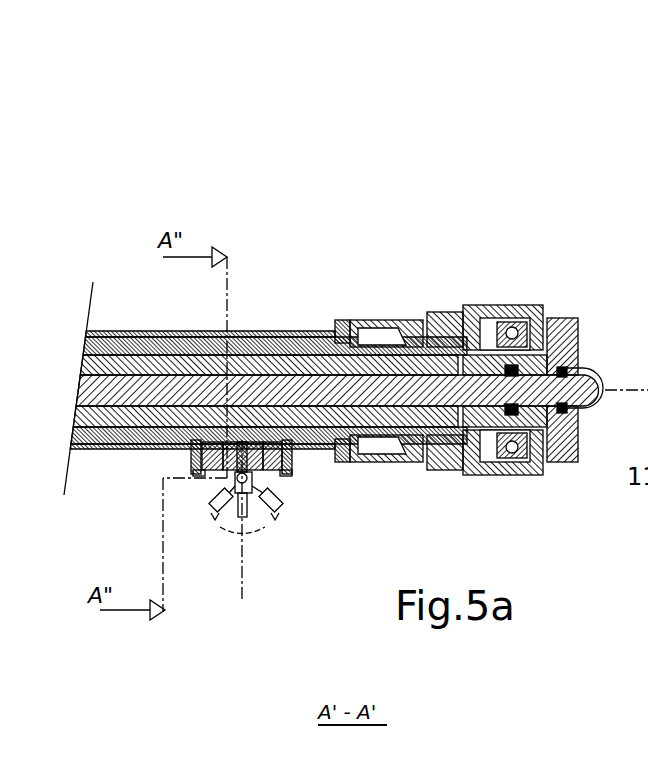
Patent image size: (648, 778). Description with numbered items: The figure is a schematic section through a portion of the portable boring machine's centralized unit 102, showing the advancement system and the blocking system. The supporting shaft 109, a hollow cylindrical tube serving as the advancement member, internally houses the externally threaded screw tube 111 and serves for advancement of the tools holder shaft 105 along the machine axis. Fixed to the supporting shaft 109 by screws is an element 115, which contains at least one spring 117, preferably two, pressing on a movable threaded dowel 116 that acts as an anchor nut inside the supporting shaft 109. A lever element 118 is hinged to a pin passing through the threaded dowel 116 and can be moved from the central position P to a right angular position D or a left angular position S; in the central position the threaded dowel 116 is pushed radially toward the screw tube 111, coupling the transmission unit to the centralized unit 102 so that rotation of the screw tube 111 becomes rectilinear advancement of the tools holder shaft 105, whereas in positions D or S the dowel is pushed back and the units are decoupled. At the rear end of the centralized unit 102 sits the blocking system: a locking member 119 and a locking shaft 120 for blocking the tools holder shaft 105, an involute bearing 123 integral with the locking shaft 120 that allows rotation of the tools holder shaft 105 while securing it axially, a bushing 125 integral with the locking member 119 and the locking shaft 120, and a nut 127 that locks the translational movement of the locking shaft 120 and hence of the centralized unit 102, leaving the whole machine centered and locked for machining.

The centralized unit 102 is at (368, 218).
The tools holder shaft 105 is at (100, 427).
The supporting shaft 109 is at (148, 352).
The screw tube 111 is at (268, 345).
The element 115 is at (287, 470).
The threaded dowel 116 is at (192, 464).
The spring 117 is at (204, 472).
The lever element 118 is at (245, 527).
The locking member 119 is at (562, 447).
The locking shaft 120 is at (408, 393).
The involute bearing 123 is at (525, 320).
The bushing 125 is at (560, 320).
The nut 127 is at (592, 375).